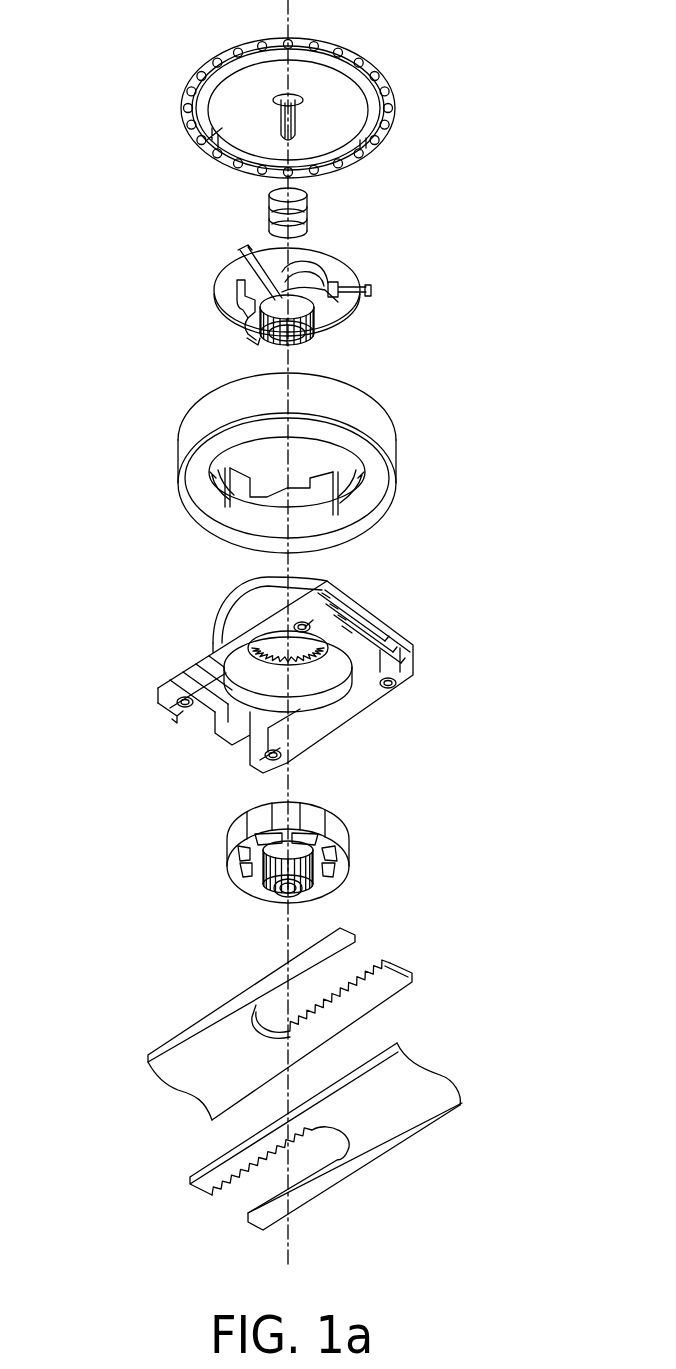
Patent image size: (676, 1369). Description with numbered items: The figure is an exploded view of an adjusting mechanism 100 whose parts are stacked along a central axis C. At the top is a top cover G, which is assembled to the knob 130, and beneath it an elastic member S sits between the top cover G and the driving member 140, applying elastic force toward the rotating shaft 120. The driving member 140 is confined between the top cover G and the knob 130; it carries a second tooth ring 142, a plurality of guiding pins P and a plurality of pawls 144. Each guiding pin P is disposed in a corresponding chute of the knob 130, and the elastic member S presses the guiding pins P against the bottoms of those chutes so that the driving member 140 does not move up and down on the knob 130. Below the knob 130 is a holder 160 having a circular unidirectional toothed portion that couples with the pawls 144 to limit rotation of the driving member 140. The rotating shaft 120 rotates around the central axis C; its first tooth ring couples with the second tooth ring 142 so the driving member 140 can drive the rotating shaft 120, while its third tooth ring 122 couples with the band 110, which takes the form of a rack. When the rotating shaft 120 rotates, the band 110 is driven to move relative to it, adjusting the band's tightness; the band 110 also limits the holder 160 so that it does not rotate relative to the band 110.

The adjusting mechanism 100 is at (552, 181).
The top cover G is at (378, 72).
The elastic member S is at (267, 207).
The driving member 140 is at (296, 289).
The second tooth ring 142 is at (320, 332).
The pawls 144 is at (238, 322).
The guiding pins P is at (372, 290).
The knob 130 is at (380, 401).
The holder 160 is at (380, 608).
The rotating shaft 120 is at (330, 854).
The third tooth ring 122 is at (310, 893).
The band 110 is at (138, 928).
The central axis C is at (290, 1248).